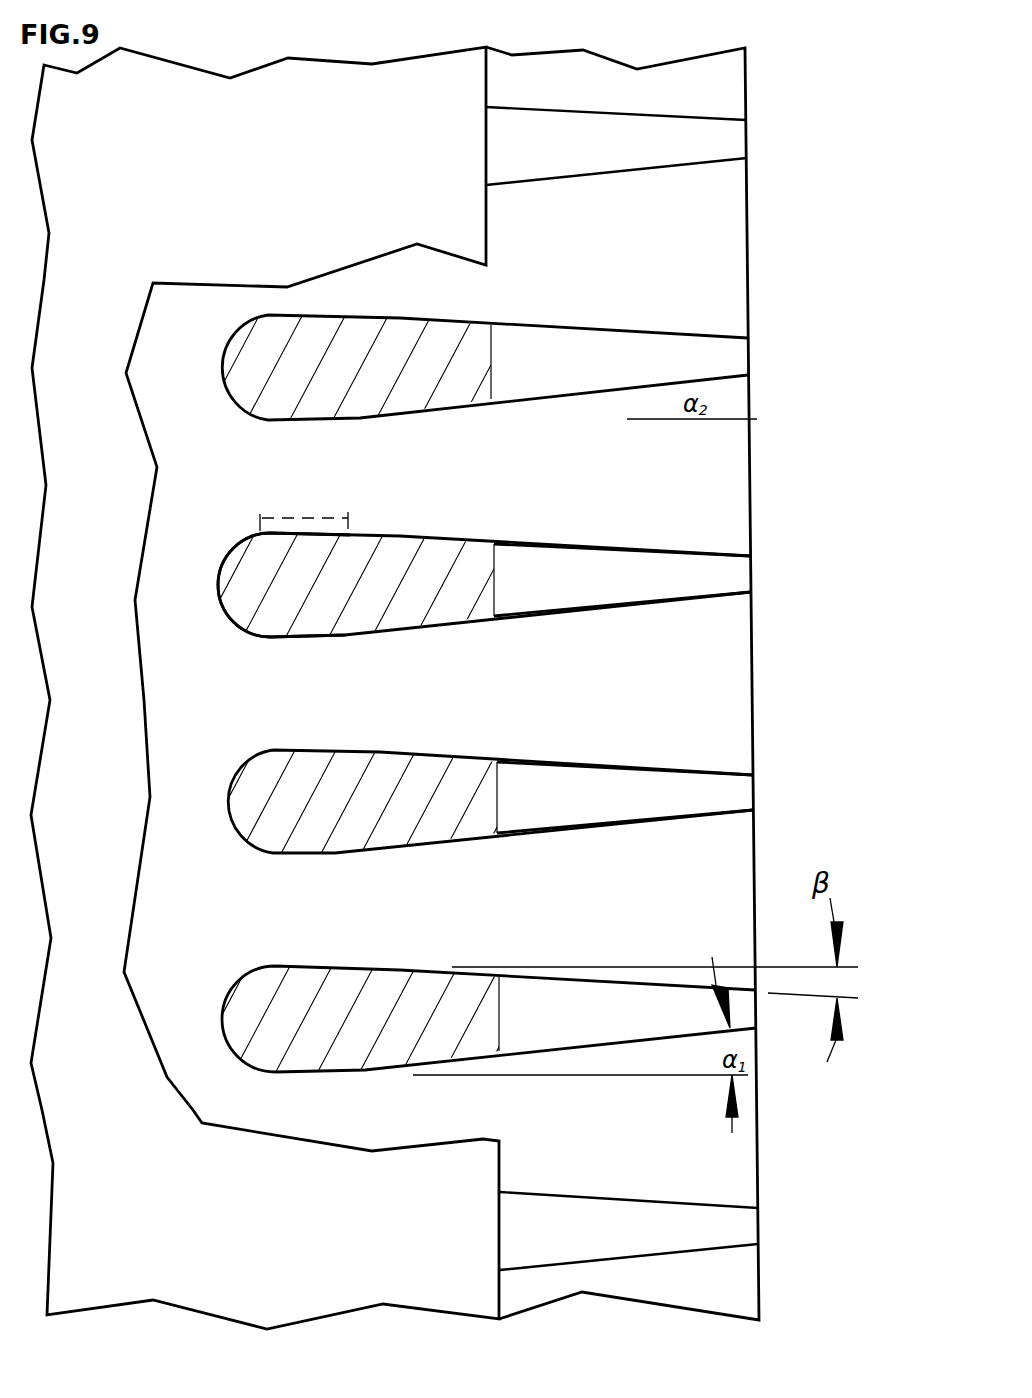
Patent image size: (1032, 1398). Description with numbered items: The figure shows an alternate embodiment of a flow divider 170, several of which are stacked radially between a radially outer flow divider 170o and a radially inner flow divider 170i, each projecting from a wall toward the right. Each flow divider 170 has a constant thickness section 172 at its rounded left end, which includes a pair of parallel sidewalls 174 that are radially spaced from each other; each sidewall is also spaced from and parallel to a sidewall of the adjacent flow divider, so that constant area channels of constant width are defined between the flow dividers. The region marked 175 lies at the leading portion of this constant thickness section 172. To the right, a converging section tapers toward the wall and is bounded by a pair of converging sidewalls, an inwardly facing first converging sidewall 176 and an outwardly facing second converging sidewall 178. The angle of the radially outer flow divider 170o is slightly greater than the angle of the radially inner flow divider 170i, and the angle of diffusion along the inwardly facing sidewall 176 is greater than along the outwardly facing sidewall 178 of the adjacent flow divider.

The radially outer flow divider 170o is at (606, 332).
The flow divider 170 is at (462, 531).
The radially inner flow divider 170i is at (558, 975).
The constant thickness section 172 is at (300, 524).
The parallel sidewalls 174 is at (348, 523).
The leading edge portion 175 is at (292, 481).
The inwardly facing first converging sidewall 176 is at (555, 616).
The outwardly facing second converging sidewall 178 is at (581, 540).